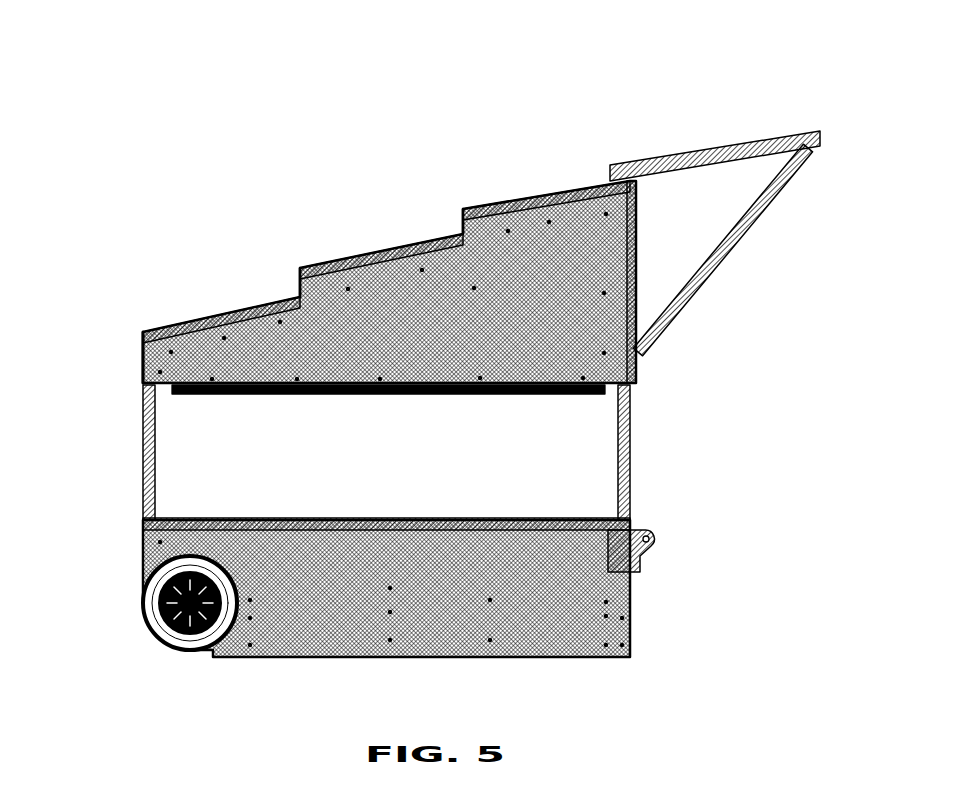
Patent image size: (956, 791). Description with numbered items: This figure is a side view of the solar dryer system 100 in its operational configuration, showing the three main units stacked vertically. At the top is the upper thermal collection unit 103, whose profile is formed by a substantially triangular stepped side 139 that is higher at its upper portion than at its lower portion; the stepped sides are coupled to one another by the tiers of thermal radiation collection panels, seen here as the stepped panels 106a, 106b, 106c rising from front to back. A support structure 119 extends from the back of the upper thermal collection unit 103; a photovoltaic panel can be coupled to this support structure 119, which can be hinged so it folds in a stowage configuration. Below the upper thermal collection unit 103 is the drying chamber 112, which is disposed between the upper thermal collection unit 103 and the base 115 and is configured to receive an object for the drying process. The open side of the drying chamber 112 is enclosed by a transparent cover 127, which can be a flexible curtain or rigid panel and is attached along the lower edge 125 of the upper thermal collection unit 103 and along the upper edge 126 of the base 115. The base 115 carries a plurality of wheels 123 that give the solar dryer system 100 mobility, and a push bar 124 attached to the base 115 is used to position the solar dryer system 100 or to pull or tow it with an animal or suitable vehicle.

The solar dryer system 100 is at (163, 142).
The upper thermal collection unit 103 is at (662, 378).
The thermal radiation collection panel 106a is at (198, 312).
The thermal radiation collection panel 106b is at (388, 250).
The thermal radiation collection panel 106c is at (521, 196).
The substantially triangular stepped side 139 is at (412, 330).
The support structure 119 is at (756, 215).
The lower edge 125 is at (455, 396).
The drying chamber 112 is at (116, 476).
The transparent cover 127 is at (355, 458).
The upper edge 126 is at (372, 518).
The base 115 is at (656, 604).
The push bar 124 is at (652, 530).
The wheel 123 is at (160, 641).